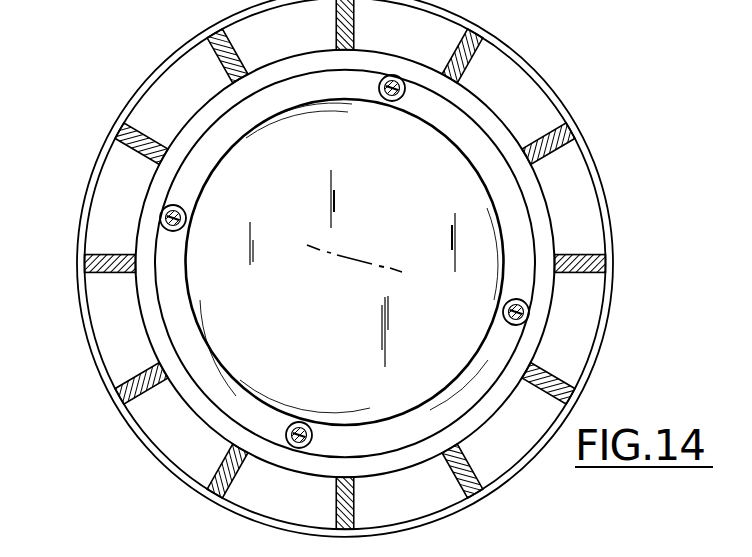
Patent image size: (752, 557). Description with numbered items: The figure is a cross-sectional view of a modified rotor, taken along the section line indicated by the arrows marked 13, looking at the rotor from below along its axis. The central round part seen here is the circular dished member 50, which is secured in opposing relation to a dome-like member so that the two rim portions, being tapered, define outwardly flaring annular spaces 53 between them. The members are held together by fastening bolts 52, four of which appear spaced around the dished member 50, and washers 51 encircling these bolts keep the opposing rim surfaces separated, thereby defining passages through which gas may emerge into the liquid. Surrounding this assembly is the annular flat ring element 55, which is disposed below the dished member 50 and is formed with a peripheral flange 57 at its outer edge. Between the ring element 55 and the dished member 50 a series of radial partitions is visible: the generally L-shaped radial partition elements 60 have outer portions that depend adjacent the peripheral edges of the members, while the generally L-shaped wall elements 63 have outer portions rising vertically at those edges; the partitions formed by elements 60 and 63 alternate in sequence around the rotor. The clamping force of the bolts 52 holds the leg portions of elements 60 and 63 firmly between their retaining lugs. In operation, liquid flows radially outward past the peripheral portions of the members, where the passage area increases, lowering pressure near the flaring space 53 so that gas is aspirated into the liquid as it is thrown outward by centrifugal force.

The section line indicator 13 is at (62, 115).
The circular dished member 50 is at (550, 222).
The washers 51 is at (393, 103).
The fastening bolts 52 is at (373, 97).
The outwardly flaring annular spaces 53 is at (152, 210).
The annular flat ring element 55 is at (570, 165).
The peripheral flange 57 is at (608, 188).
The L-shaped radial partition elements 60 is at (572, 270).
The L-shaped wall elements 63 is at (133, 137).